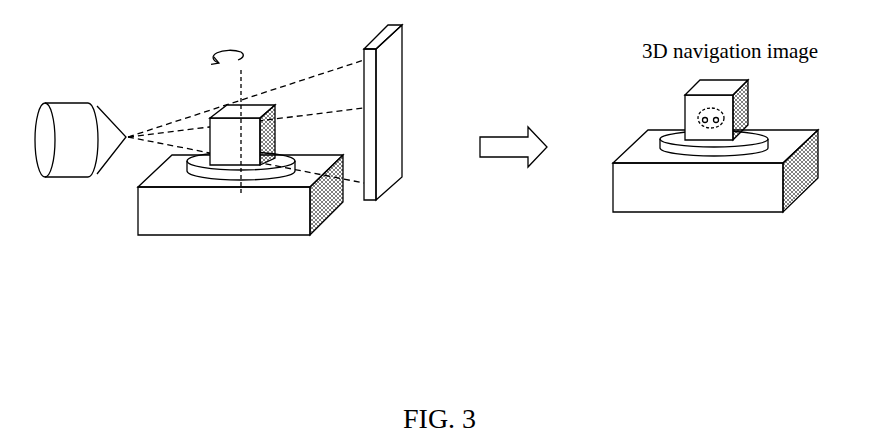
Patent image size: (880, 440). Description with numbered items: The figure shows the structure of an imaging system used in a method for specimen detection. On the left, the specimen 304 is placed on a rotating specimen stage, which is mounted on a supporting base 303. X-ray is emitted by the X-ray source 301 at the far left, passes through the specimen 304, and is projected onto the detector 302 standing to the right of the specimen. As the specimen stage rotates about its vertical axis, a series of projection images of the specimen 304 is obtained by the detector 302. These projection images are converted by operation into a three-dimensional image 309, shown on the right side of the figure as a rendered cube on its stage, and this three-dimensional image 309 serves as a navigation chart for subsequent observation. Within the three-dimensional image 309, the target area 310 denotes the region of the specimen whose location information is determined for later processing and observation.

The X-ray source 301 is at (63, 184).
The detector 302 is at (410, 84).
The turntable base 303 is at (240, 239).
The specimen 304 is at (257, 102).
The three-dimensional image 309 is at (757, 99).
The target area 310 is at (712, 134).